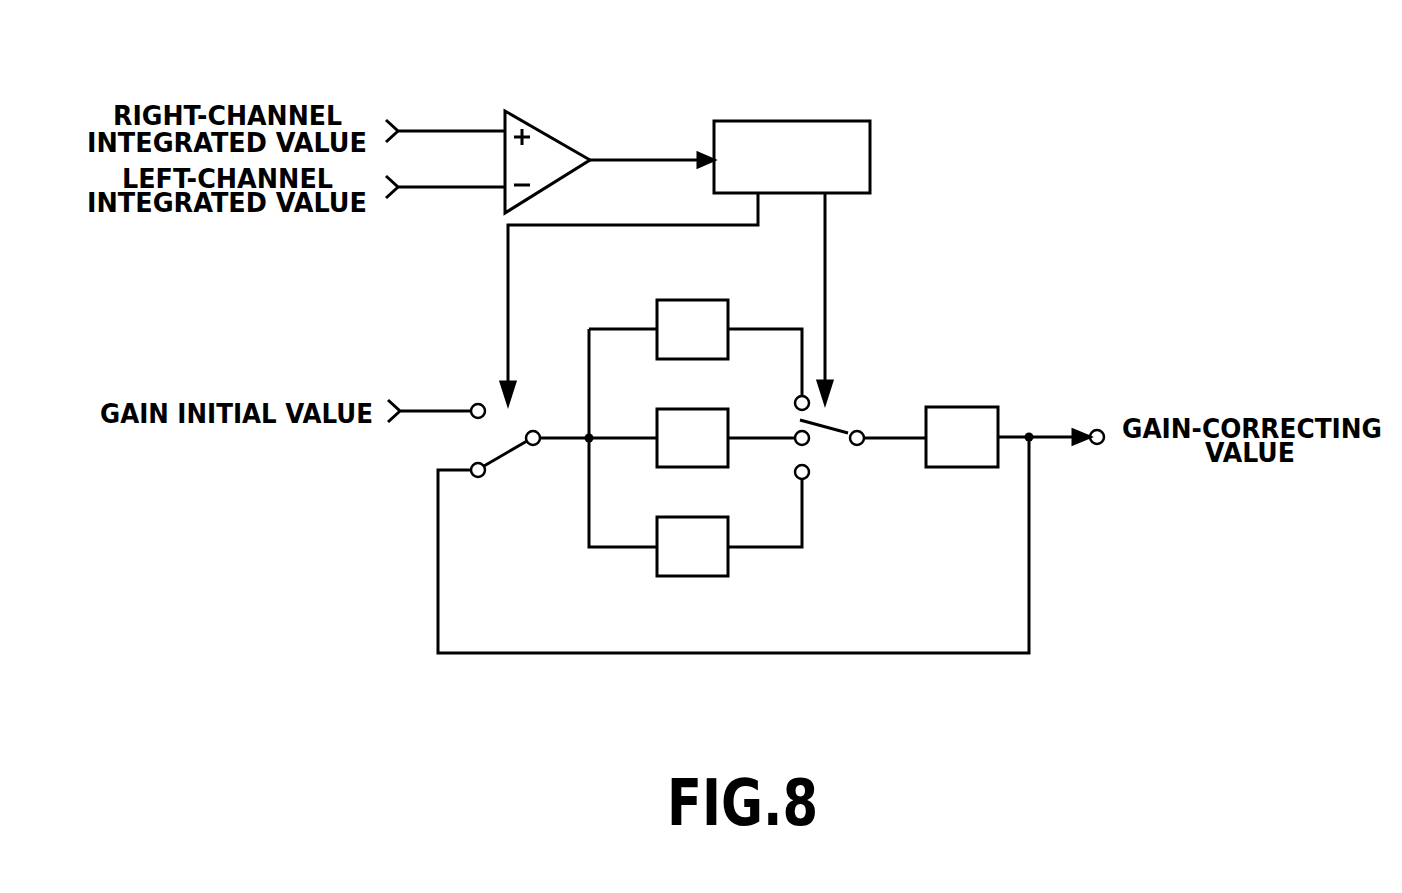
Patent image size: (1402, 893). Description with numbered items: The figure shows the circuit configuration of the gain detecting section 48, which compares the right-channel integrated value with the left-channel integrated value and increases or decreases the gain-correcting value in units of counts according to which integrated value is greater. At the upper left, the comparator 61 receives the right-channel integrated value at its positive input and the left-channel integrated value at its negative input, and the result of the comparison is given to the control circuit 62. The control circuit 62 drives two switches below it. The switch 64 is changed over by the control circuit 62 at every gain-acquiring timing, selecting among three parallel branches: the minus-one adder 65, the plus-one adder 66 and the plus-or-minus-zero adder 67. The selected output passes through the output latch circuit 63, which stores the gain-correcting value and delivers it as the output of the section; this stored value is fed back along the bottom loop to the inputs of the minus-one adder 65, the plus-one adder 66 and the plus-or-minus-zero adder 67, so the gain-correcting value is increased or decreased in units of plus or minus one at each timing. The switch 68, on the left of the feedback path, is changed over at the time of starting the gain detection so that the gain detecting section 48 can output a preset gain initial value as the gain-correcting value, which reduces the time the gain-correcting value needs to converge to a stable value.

The gain detecting section 48 is at (950, 120).
The comparator 61 is at (543, 128).
The control circuit 62 is at (790, 121).
The output latch circuit 63 is at (963, 405).
The switch 64 is at (815, 457).
The −1 adder 65 is at (705, 516).
The +1 adder 66 is at (703, 408).
The ±0 adder 67 is at (703, 298).
The switch 68 is at (502, 418).